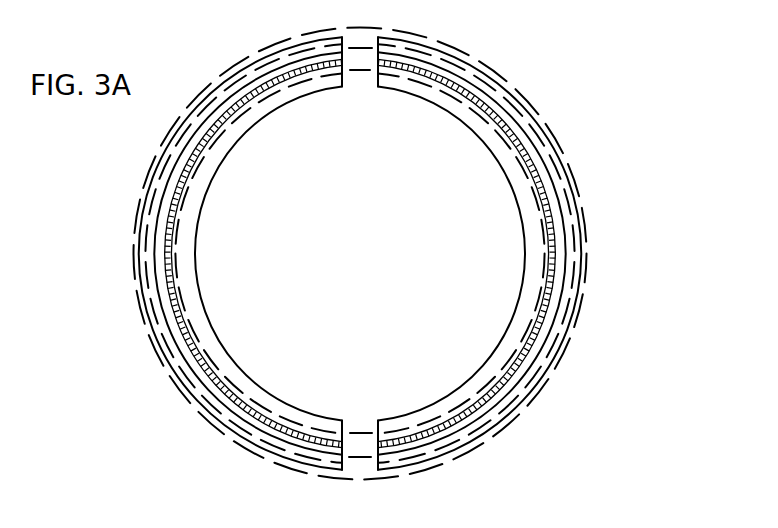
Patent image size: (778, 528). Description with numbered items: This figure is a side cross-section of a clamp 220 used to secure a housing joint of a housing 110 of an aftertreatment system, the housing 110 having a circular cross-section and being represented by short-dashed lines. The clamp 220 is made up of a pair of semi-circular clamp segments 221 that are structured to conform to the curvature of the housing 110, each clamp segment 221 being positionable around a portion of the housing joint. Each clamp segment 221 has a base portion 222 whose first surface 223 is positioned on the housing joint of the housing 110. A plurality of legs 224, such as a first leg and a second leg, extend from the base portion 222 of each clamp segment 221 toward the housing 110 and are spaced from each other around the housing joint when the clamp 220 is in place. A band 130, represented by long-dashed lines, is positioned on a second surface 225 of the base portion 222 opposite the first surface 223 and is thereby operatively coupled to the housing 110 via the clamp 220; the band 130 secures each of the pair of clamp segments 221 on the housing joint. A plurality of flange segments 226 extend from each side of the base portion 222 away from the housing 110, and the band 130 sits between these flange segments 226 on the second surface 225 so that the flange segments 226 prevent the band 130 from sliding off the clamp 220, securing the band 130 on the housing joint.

The clamp 220 is at (504, 58).
The clamp segment 221 is at (533, 103).
The band 130 is at (557, 138).
The flange segments 226 is at (565, 223).
The base portion 222 is at (553, 268).
The first surface 223 is at (545, 305).
The legs 224 is at (515, 330).
The second surface 225 is at (515, 382).
The housing 110 is at (476, 411).